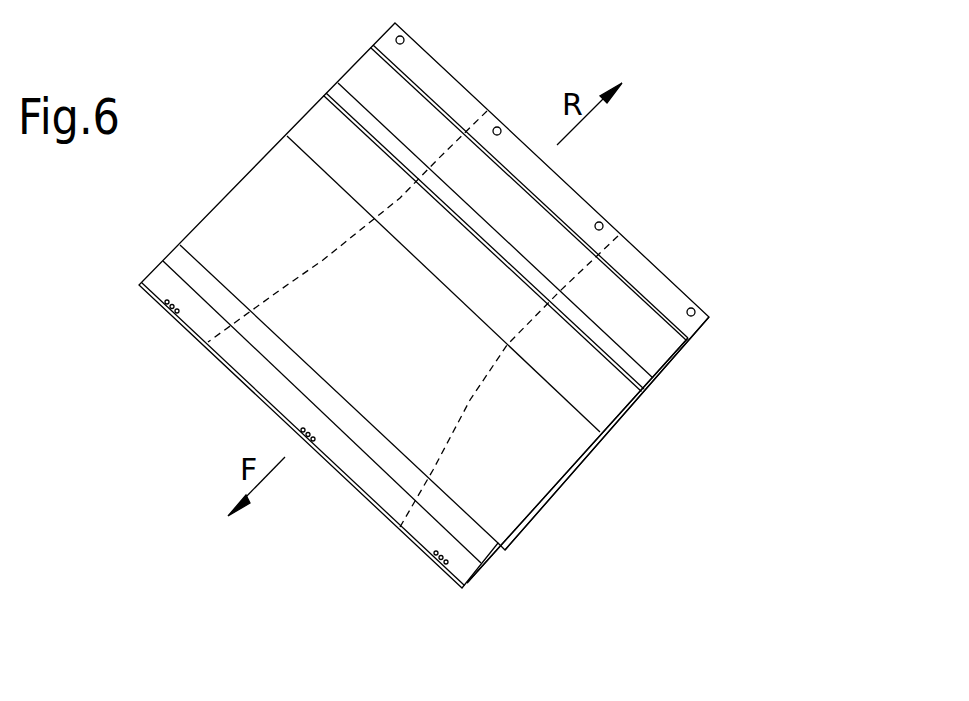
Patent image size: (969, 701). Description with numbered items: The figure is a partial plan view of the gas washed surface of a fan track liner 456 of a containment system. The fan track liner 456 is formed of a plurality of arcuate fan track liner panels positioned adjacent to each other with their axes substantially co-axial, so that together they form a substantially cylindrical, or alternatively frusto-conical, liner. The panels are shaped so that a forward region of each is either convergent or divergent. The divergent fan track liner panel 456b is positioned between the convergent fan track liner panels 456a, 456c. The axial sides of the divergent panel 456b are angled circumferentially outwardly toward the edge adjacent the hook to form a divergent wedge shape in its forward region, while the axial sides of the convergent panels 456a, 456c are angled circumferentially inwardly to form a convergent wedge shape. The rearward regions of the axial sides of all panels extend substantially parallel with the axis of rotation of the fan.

The fan track liner 456 is at (655, 185).
The convergent fan track liner panel 456a is at (275, 188).
The divergent fan track liner panel 456b is at (323, 360).
The convergent fan track liner panel 456c is at (515, 455).